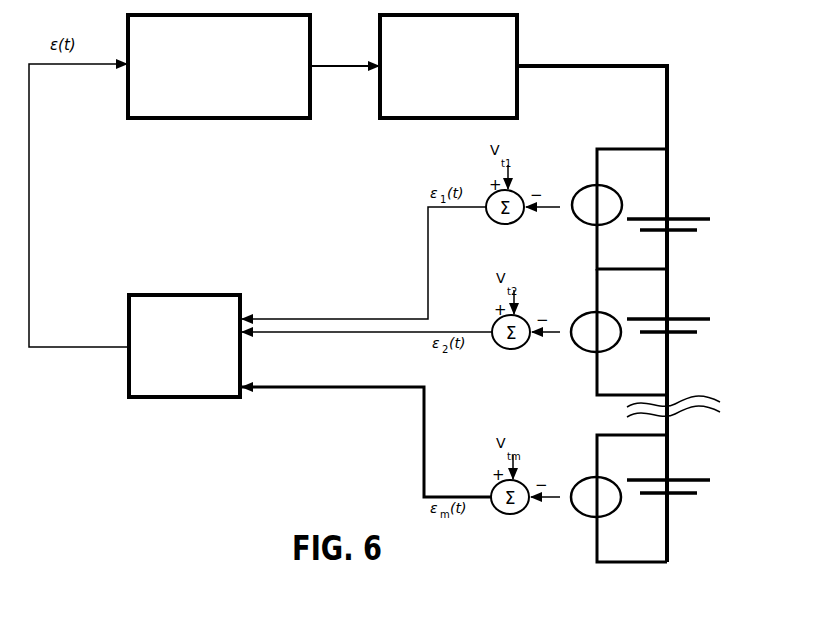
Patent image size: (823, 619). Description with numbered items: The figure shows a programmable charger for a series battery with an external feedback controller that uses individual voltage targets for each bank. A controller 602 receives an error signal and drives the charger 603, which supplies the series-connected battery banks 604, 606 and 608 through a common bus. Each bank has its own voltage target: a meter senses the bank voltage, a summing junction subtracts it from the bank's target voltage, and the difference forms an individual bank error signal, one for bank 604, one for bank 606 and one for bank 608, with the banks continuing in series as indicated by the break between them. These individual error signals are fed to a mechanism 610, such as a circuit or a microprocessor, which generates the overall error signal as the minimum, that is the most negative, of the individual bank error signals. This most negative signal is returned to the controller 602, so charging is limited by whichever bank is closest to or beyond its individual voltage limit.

The controller 602 is at (219, 66).
The charger 603 is at (448, 66).
The bank 604 is at (670, 209).
The bank 606 is at (670, 332).
The bank 608 is at (670, 498).
The mechanism 610 is at (184, 346).